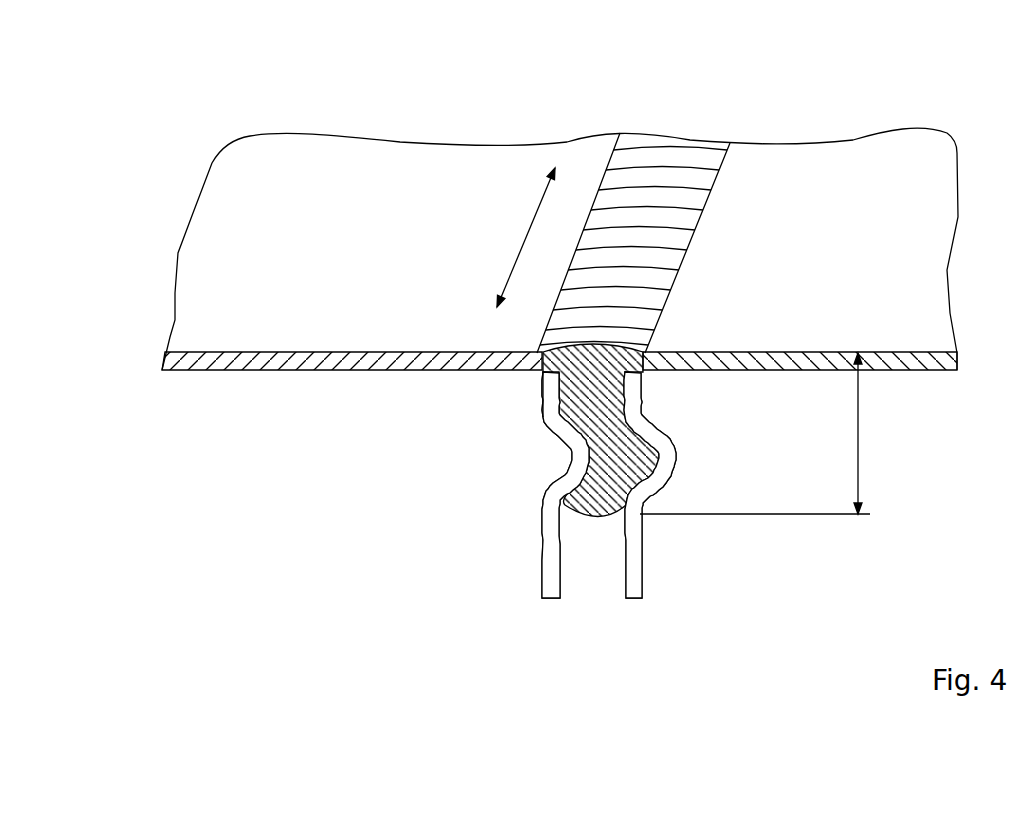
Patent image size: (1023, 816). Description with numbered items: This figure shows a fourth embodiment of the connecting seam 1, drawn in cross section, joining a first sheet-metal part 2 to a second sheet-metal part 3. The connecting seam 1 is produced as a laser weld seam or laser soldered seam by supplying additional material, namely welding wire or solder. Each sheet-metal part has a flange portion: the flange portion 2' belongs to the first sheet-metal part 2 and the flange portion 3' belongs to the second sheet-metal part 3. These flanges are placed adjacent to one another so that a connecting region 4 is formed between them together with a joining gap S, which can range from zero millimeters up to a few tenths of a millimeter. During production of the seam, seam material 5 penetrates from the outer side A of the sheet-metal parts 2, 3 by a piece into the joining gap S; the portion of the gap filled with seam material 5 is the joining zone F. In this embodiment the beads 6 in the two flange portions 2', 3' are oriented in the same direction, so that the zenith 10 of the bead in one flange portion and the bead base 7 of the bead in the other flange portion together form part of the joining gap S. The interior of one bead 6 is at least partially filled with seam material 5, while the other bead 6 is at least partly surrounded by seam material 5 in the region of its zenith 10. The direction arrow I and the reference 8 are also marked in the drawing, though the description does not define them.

The connecting seam 1 is at (652, 160).
The first sheet-metal part 2 is at (352, 209).
The second sheet-metal part 3 is at (800, 204).
The connecting region 4 is at (512, 505).
The seam material 5 is at (542, 395).
The bead 6 is at (558, 510).
The bead base 7 is at (573, 457).
The leg end 8 is at (623, 582).
The zenith 10 is at (570, 435).
The flange portion of the first sheet-metal part 2' is at (528, 499).
The flange portion of the second sheet-metal part 3' is at (671, 497).
The outer side A is at (428, 168).
The weld direction I is at (520, 237).
The joining gap S is at (595, 565).
The joining zone F is at (865, 463).